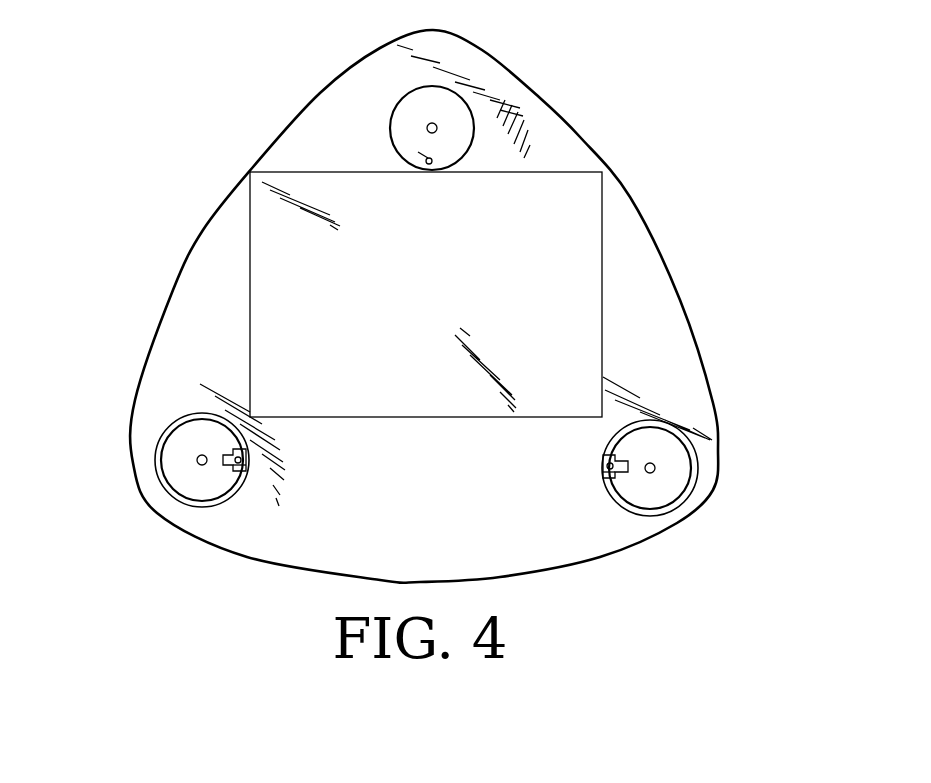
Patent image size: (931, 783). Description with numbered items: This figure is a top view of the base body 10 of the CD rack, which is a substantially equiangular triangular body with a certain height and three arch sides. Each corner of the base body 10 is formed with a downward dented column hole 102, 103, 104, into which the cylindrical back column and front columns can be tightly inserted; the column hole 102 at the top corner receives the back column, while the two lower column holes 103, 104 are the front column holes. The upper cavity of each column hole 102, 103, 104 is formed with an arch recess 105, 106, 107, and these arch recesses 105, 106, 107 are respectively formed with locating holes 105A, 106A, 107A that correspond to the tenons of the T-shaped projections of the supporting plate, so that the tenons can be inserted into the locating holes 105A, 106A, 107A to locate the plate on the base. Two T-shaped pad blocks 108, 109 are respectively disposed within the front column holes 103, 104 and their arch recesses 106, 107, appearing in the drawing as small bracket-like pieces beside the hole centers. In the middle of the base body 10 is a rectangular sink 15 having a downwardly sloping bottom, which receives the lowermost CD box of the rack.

The base body 10 is at (677, 300).
The rectangular sink 15 is at (590, 205).
The column hole 102 is at (462, 107).
The arch recess 105 is at (430, 167).
The locating hole 105A is at (428, 158).
The column hole 103 is at (177, 442).
The column hole 104 is at (682, 480).
The arch recess 106 is at (247, 460).
The locating hole 106A is at (230, 467).
The arch recess 107 is at (603, 466).
The locating hole 107A is at (605, 478).
The T-shaped pad block 108 is at (227, 467).
The T-shaped pad block 109 is at (625, 472).